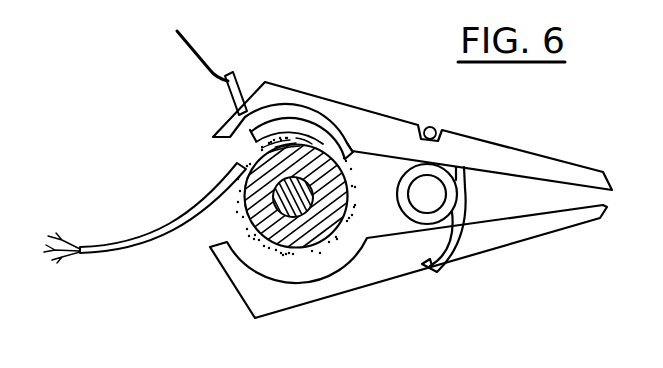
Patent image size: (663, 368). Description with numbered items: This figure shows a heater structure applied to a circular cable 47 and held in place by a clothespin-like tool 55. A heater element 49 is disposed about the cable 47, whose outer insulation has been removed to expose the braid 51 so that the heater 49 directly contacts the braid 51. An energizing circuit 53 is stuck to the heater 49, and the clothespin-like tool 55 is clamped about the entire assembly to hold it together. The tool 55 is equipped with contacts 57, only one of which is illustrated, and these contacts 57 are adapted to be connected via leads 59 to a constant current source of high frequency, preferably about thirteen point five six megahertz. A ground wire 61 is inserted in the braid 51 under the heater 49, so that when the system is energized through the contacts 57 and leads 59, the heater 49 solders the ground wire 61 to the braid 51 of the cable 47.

The circular cable 47 is at (322, 221).
The heater element 49 is at (351, 148).
The braid 51 is at (374, 153).
The energizing circuit 53 is at (295, 133).
The clothespin-like tool 55 is at (444, 110).
The contacts 57 is at (236, 81).
The leads 59 is at (205, 65).
The ground wire 61 is at (171, 225).